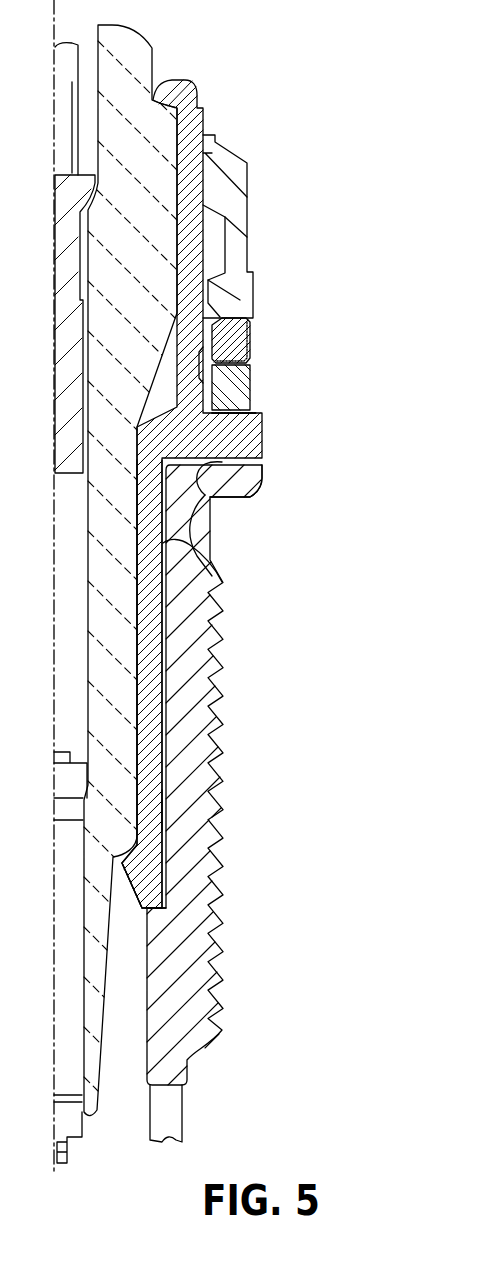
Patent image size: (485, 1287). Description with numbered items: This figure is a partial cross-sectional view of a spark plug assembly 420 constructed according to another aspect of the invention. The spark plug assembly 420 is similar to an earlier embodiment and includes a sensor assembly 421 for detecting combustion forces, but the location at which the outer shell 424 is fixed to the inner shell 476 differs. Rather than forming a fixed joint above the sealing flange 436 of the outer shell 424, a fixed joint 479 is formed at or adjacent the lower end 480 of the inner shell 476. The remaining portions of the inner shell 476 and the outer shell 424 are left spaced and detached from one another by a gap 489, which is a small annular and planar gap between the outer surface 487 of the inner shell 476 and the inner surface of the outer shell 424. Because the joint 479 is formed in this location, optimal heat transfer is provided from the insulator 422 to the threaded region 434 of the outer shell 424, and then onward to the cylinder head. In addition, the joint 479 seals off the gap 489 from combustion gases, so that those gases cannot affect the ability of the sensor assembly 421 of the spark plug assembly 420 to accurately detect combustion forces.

The spark plug assembly 420 is at (283, 44).
The sensor assembly 421 is at (307, 410).
The insulator 422 is at (177, 196).
The outer shell 424 is at (213, 655).
The threaded region 434 is at (295, 590).
The sealing flange 436 is at (247, 496).
The inner shell 476 is at (165, 723).
The fixed joint 479 is at (165, 898).
The lower end 480 is at (135, 885).
The outer surface 487 is at (163, 810).
The gap 489 is at (205, 497).